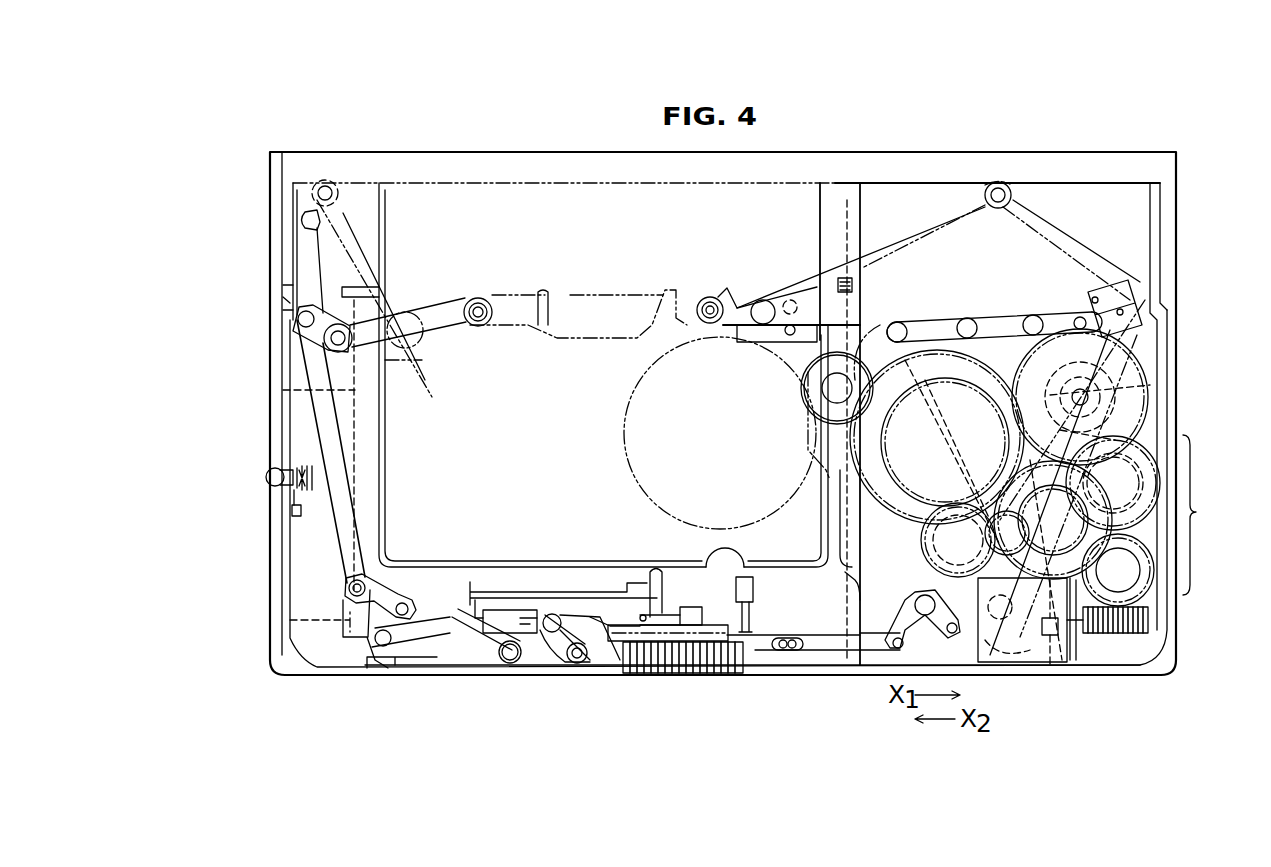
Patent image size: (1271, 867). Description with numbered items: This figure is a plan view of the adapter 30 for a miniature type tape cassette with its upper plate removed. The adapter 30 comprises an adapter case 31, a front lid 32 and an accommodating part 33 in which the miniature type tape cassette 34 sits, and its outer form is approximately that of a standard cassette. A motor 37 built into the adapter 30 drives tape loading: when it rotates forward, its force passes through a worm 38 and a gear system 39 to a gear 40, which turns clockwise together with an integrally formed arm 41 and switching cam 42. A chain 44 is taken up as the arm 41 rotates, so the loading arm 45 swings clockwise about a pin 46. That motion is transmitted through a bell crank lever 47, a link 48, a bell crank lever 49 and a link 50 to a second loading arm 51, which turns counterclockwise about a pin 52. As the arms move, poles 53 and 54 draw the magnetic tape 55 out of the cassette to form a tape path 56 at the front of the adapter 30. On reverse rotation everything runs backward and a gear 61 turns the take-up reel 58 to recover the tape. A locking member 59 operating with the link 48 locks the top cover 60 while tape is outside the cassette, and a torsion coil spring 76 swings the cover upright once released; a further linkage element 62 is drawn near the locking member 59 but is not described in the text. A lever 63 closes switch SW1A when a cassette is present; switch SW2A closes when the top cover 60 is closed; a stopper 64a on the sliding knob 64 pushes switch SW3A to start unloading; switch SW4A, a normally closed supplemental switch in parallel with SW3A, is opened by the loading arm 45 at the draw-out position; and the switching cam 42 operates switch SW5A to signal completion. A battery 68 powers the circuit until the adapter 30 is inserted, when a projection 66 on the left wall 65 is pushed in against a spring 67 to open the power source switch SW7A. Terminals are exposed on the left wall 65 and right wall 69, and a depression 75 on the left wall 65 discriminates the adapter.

The adapter 30 is at (578, 138).
The adapter case 31 is at (878, 676).
The front lid 32 is at (1125, 152).
The accommodating part 33 is at (815, 574).
The miniature type tape cassette 34 is at (835, 505).
The motor 37 is at (1040, 660).
The worm 38 is at (1116, 636).
The gear system 39 is at (1205, 515).
The gear 40 is at (1125, 400).
The arm 41 is at (1075, 373).
The switching cam 42 is at (1130, 382).
The chain 44 is at (984, 318).
The loading arm 45 is at (1066, 238).
The pin 46 is at (1022, 620).
The bell crank lever 47 is at (903, 625).
The link 48 is at (785, 638).
The bell crank lever 49 is at (402, 598).
The link 50 is at (320, 422).
The loading arm 51 is at (320, 246).
The pin 52 is at (346, 352).
The pole 53 is at (706, 296).
The pole 54 is at (315, 188).
The magnetic tape 55 is at (345, 242).
The tape path 56 is at (850, 186).
The take-up reel 58 is at (624, 433).
The locking member 59 is at (550, 640).
The top cover 60 is at (858, 560).
The gear 61 is at (800, 424).
The link 62 is at (483, 630).
The lever 63 is at (632, 580).
The sliding knob 64 is at (688, 668).
The stopper 64a is at (700, 648).
The left wall 65 is at (280, 352).
The projection 66 is at (272, 470).
The spring 67 is at (308, 492).
The battery 68 is at (362, 433).
The right wall 69 is at (1180, 427).
The depression 75 is at (280, 298).
The torsion coil spring 76 is at (843, 275).
The switch SW1A is at (670, 615).
The switch SW2A is at (520, 605).
The switch SW3A is at (765, 612).
The supplemental switch SW4A is at (1056, 662).
The switch SW5A is at (1130, 300).
The switch SW7A is at (290, 505).